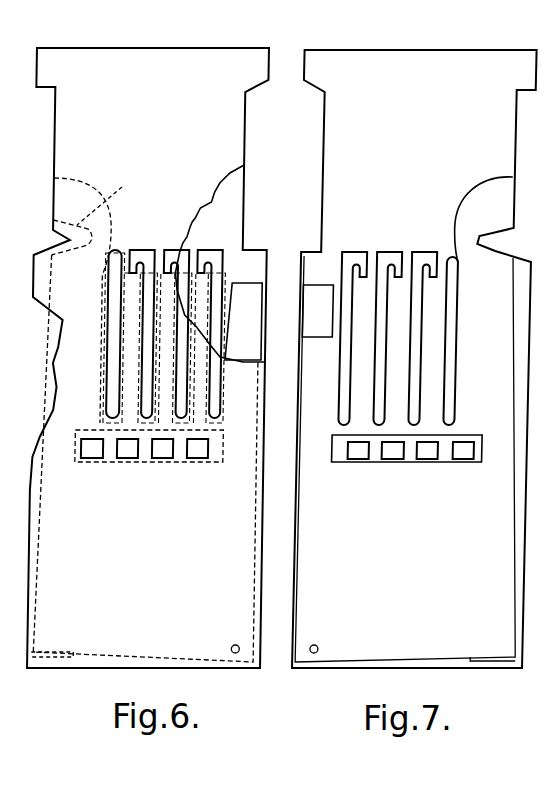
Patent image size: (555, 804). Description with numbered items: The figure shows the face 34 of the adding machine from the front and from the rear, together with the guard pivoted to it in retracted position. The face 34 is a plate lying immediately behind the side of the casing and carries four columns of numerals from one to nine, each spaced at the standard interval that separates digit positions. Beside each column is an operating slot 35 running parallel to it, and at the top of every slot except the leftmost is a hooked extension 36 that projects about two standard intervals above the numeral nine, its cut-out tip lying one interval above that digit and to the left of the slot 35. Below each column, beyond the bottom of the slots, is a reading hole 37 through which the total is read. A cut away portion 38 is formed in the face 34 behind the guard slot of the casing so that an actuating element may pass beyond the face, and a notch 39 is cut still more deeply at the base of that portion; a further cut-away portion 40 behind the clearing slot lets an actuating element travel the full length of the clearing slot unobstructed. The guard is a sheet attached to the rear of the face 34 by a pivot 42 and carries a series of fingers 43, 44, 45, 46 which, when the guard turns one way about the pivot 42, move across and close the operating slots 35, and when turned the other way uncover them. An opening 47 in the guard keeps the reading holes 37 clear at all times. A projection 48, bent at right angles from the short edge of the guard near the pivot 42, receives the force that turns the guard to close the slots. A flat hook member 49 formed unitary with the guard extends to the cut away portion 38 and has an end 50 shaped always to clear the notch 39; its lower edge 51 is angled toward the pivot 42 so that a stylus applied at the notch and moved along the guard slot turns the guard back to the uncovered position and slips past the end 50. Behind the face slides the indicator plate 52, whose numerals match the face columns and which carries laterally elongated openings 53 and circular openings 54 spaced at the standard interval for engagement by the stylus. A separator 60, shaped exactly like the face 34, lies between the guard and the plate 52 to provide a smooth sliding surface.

In FIG. 6, the face 34 is at (67, 573).
In FIG. 7, the face 34 is at (293, 553).
In FIG. 6, the operating slot 35 is at (145, 322).
In FIG. 7, the operating slot 35 is at (554, 289).
In FIG. 6, the hooked extension 36 is at (203, 250).
In FIG. 7, the hooked extension 36 is at (417, 252).
In FIG. 6, the reading hole 37 is at (163, 452).
In FIG. 7, the reading hole 37 is at (465, 452).
In FIG. 6, the cut away portion 38 is at (53, 142).
In FIG. 7, the cut away portion 38 is at (517, 138).
In FIG. 6, the notch 39 is at (67, 239).
In FIG. 7, the notch 39 is at (508, 242).
In FIG. 6, the cut-away portion 40 is at (245, 140).
In FIG. 7, the cut-away portion 40 is at (325, 170).
In FIG. 6, the pivot 42 is at (237, 655).
In FIG. 7, the pivot 42 is at (315, 653).
In FIG. 7, the finger 43 is at (554, 410).
In FIG. 7, the finger 44 is at (540, 432).
In FIG. 6, the finger 45 is at (202, 288).
In FIG. 7, the finger 45 is at (360, 315).
In FIG. 6, the finger 46 is at (238, 290).
In FIG. 7, the finger 46 is at (315, 300).
In FIG. 6, the opening 47 is at (216, 460).
In FIG. 7, the opening 47 is at (337, 460).
In FIG. 6, the projection 48 is at (57, 657).
In FIG. 7, the projection 48 is at (492, 660).
In FIG. 7, the hook member 49 is at (537, 378).
In FIG. 6, the end 50 is at (67, 188).
In FIG. 7, the end 50 is at (497, 192).
In FIG. 6, the lower edge 51 is at (108, 196).
In FIG. 7, the lower edge 51 is at (497, 225).
In FIG. 6, the indicator plate 52 is at (16, 555).
In FIG. 6, the elongated opening 53 is at (0, 145).
In FIG. 6, the circular opening 54 is at (0, 382).
In FIG. 6, the separator 60 is at (233, 183).